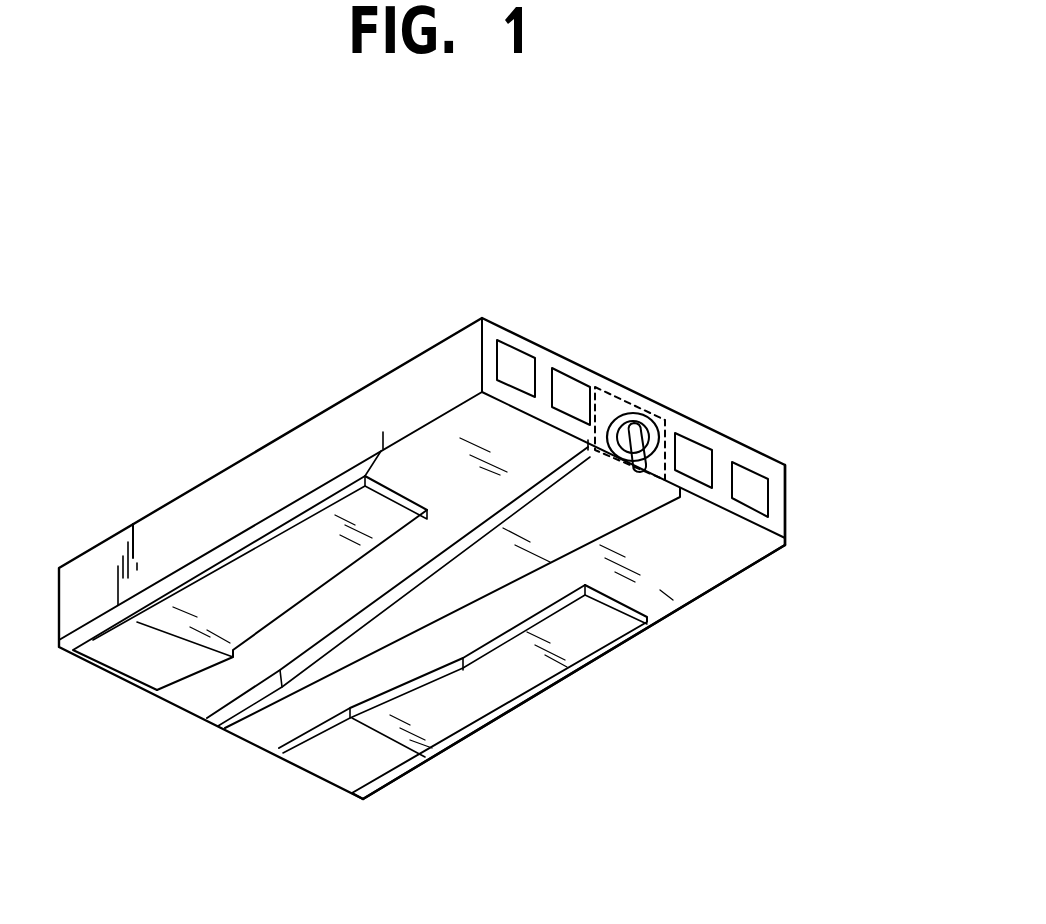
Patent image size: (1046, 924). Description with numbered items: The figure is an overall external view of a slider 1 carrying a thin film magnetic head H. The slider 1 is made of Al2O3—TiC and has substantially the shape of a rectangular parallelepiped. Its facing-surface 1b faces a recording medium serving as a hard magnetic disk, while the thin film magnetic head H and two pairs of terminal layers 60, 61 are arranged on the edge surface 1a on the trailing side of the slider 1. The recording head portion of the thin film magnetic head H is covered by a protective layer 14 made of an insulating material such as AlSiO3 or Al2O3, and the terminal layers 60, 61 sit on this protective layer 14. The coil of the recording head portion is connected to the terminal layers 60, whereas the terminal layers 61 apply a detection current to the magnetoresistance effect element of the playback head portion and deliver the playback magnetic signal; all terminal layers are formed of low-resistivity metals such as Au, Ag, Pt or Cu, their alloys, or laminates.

The slider 1 is at (379, 370).
The edge surface 1a is at (775, 522).
The facing-surface 1b is at (683, 550).
The protective layer 14 is at (636, 396).
The terminal layers 60 is at (511, 366).
The terminal layers 61 is at (570, 398).
The thin film magnetic head H is at (632, 400).